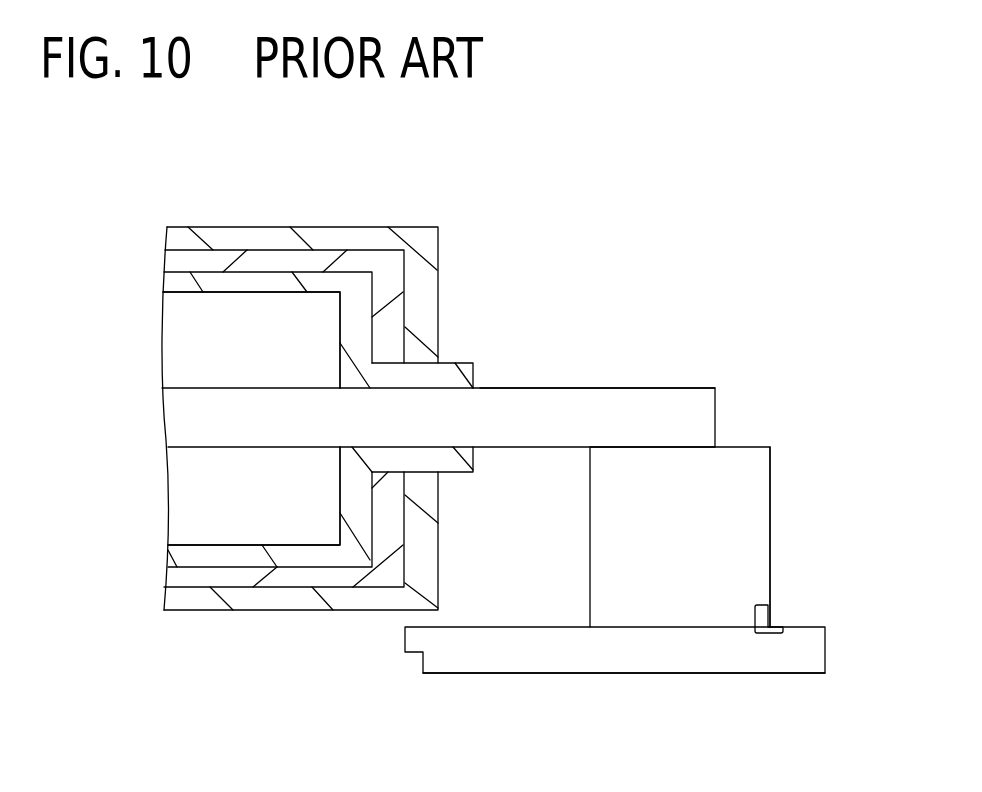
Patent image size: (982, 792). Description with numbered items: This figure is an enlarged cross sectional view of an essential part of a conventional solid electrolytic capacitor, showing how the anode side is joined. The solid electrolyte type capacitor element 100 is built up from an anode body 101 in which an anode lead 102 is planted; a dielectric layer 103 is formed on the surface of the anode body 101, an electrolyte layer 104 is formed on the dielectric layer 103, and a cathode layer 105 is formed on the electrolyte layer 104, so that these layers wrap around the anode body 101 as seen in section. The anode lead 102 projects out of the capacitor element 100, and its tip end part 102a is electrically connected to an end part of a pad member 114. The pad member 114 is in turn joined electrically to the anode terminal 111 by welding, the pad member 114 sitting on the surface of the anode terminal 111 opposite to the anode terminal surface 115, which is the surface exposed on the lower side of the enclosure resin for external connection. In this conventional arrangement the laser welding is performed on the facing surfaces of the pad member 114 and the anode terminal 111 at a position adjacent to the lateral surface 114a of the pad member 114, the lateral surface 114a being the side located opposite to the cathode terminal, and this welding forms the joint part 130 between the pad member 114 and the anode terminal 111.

The capacitor element 100 is at (262, 370).
The anode body 101 is at (193, 357).
The anode lead 102 is at (193, 417).
The tip end part 102a is at (595, 387).
The dielectric layer 103 is at (175, 283).
The electrolyte layer 104 is at (175, 260).
The cathode layer 105 is at (175, 238).
The anode terminal 111 is at (542, 652).
The pad member 114 is at (728, 470).
The lateral surface 114a is at (770, 533).
The anode terminal surface 115 is at (628, 673).
The joint part 130 is at (760, 620).